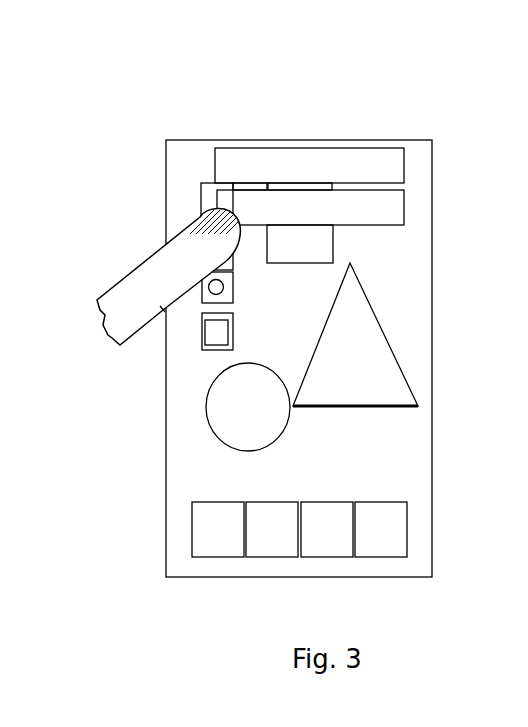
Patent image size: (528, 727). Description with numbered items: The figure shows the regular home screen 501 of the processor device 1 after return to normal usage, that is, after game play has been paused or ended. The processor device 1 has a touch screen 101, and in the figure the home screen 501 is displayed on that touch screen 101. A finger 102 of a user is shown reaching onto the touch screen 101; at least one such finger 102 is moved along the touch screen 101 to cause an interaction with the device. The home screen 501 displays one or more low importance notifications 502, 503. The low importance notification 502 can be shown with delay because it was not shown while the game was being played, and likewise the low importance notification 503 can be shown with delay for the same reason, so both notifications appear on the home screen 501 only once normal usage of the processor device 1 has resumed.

The processor device 1 is at (316, 60).
The touch screen 101 is at (431, 157).
The fingers of at least one user 102 is at (138, 270).
The home screen 501 is at (395, 523).
The low importance notification 502 is at (309, 165).
The low importance notification 503 is at (310, 207).